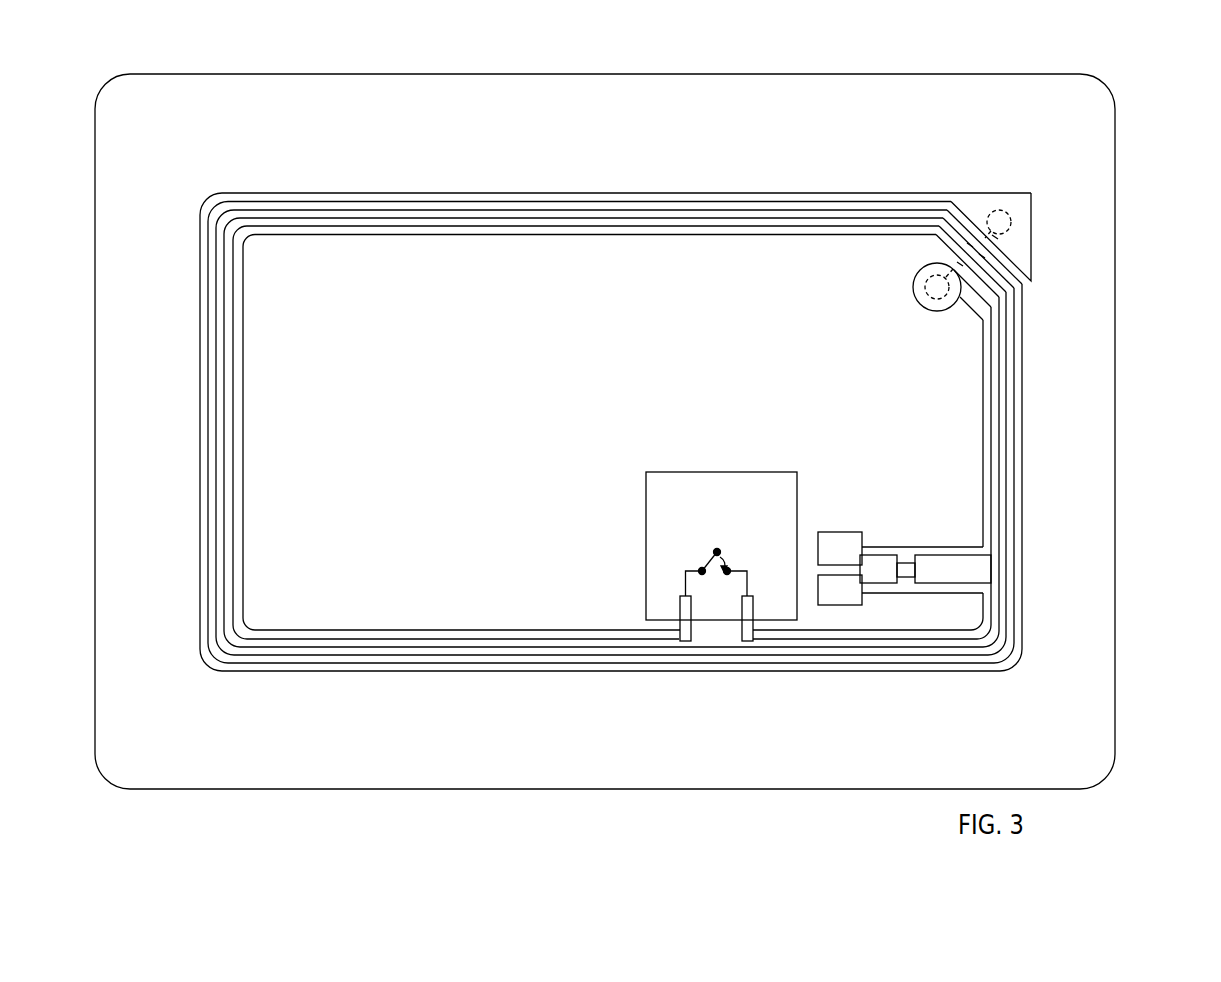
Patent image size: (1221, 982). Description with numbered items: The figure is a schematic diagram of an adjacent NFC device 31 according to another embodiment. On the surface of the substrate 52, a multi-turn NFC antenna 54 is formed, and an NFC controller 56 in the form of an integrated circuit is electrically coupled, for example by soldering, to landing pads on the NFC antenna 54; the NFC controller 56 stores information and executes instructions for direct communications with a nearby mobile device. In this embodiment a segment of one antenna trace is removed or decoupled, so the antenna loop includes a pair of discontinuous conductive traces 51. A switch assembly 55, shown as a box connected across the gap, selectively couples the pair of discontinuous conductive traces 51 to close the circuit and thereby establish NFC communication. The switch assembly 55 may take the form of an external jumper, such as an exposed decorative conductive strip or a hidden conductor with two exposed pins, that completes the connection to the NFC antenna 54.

The adjacent NFC device 31 is at (630, 437).
The substrate 52 is at (890, 108).
The NFC antenna 54 is at (768, 190).
The NFC controller 56 is at (908, 578).
The switch assembly 55 is at (646, 604).
The pair of discontinuous conductive traces 51 is at (685, 641).